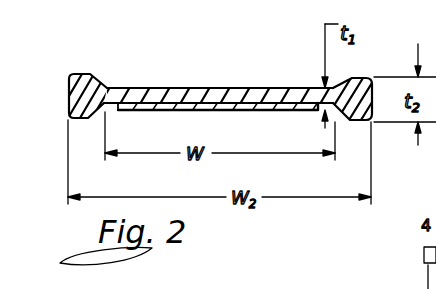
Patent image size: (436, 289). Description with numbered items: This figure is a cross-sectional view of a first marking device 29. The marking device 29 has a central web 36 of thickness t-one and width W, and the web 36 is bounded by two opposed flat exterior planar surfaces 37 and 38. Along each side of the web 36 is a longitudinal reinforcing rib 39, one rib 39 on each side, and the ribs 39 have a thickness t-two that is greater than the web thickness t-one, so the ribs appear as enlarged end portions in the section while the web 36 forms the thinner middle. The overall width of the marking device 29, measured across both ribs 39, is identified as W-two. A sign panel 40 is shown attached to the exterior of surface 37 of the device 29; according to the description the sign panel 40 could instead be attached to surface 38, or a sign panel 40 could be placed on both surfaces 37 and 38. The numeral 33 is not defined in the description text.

The marking device 29 is at (76, 60).
The longitudinal reinforcing ribs 39 is at (69, 105).
The shoulder junction 33 is at (118, 90).
The exterior planar surface 38 is at (178, 87).
The central web 36 is at (245, 86).
The exterior planar surface 37 is at (117, 111).
The sign panel 40 is at (274, 109).